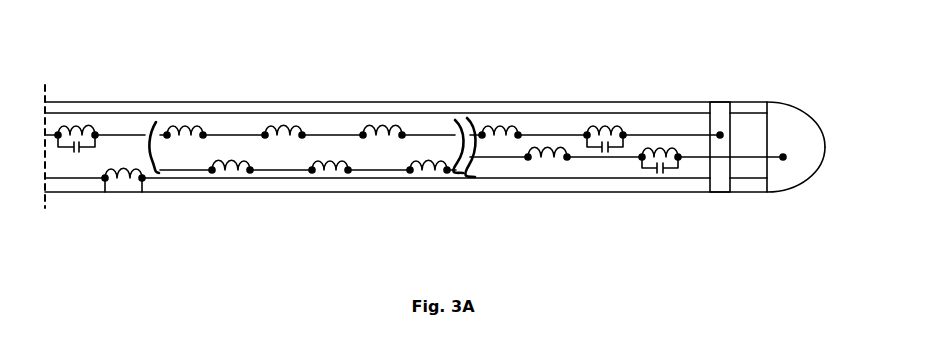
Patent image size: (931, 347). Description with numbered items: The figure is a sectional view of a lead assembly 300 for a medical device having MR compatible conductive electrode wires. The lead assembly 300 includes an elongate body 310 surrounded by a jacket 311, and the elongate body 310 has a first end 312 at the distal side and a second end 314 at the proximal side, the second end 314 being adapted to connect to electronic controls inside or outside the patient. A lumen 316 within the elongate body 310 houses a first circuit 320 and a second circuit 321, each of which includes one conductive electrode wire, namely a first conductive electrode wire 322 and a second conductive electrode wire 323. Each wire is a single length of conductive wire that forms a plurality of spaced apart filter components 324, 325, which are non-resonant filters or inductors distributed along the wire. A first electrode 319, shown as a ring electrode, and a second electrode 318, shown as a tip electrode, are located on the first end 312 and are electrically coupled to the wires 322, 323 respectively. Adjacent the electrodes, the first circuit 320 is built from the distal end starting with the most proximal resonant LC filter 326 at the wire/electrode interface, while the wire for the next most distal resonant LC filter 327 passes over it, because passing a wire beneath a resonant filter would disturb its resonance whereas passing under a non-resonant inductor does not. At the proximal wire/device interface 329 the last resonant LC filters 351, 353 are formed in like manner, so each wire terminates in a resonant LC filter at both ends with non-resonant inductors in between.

The lead assembly 300 is at (578, 66).
The elongate body 310 is at (678, 102).
The jacket 311 is at (510, 108).
The first end 312 is at (826, 157).
The second end 314 is at (146, 132).
The lumen 316 is at (293, 153).
The second electrode 318 is at (793, 117).
The first electrode 319 is at (720, 108).
The first circuit 320 is at (349, 125).
The second circuit 321 is at (586, 170).
The first conductive electrode wire 322 is at (432, 130).
The second conductive electrode wire 323 is at (498, 158).
The filter components 324 is at (278, 122).
The filter components 325 is at (420, 163).
The resonant LC filter 326 is at (602, 124).
The resonant LC filter 327 is at (672, 170).
The wire/device interface 329 is at (47, 207).
The resonant LC filter 351 is at (120, 193).
The resonant LC filter 353 is at (82, 125).